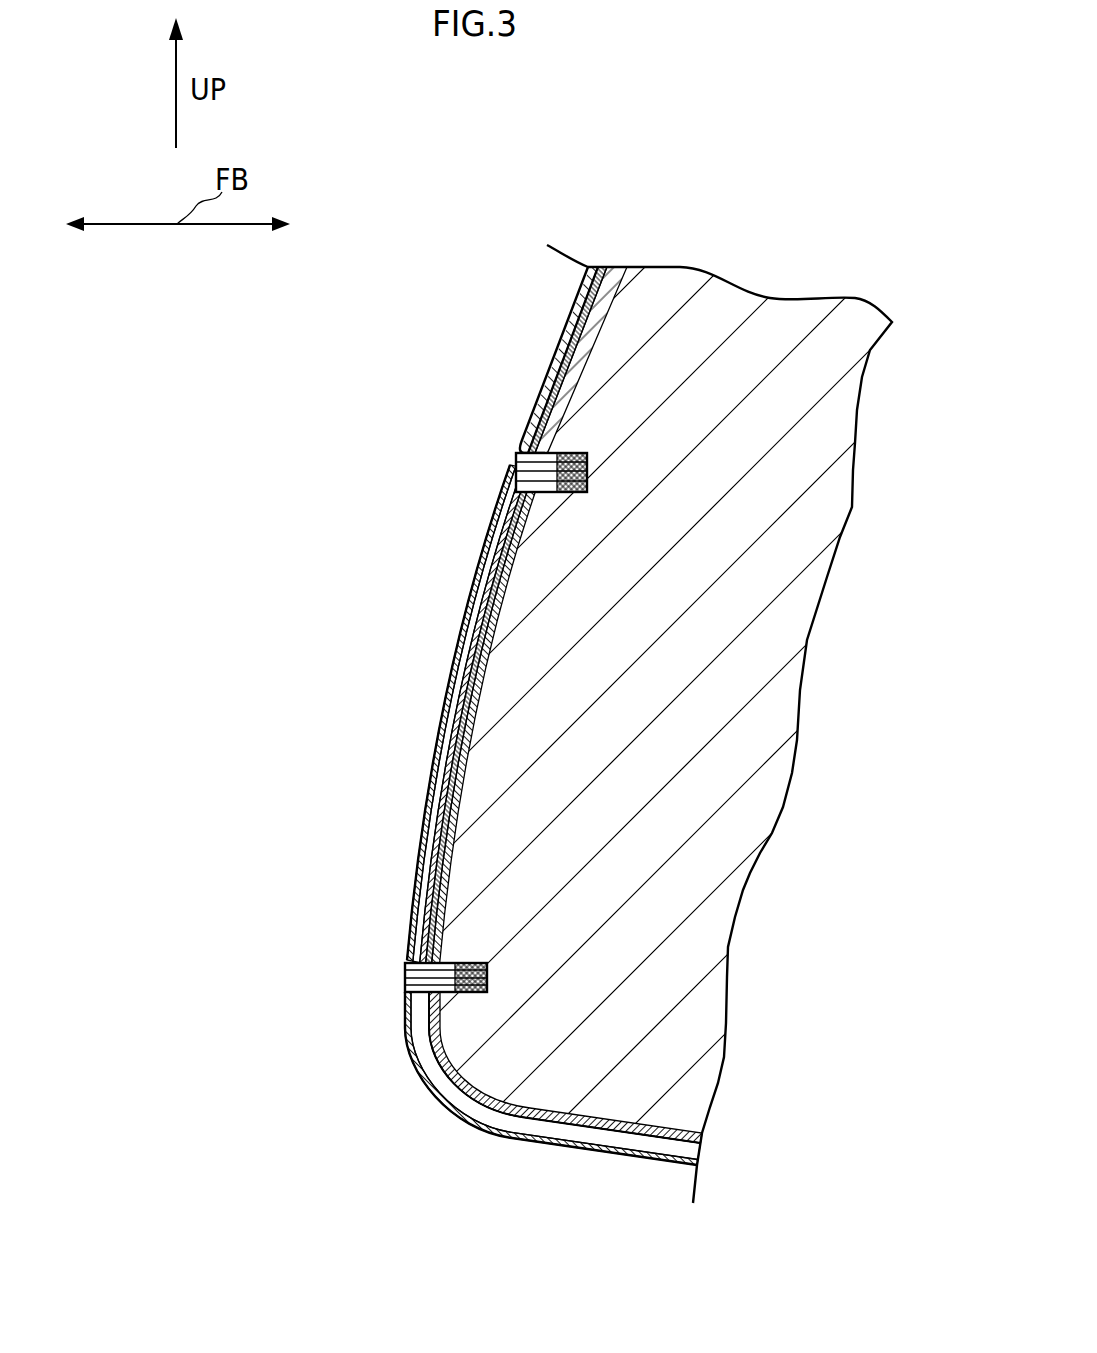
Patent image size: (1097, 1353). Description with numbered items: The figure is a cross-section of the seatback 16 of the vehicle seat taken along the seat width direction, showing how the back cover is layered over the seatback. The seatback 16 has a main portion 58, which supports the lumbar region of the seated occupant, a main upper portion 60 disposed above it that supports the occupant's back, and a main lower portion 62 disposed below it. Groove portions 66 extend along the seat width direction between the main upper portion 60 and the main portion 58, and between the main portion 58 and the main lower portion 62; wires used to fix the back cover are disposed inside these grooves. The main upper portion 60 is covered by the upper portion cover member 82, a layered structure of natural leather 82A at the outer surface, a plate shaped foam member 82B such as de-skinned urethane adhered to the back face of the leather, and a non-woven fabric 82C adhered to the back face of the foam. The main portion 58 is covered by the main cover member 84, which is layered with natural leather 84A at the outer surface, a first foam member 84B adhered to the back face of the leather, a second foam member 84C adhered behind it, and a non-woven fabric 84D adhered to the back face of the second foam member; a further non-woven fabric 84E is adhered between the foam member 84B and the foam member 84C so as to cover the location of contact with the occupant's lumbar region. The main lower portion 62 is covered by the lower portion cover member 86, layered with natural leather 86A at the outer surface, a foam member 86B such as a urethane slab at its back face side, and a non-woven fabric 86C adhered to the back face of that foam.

The seatback 16 is at (840, 592).
The main portion 58 is at (404, 716).
The main upper portion 60 is at (567, 348).
The main lower portion 62 is at (531, 1126).
The groove portions 66 is at (515, 454).
The upper portion cover member 82 is at (481, 360).
The natural leather 82A is at (558, 341).
The foam member 82B is at (546, 369).
The non-woven fabric 82C is at (556, 408).
The main cover member 84 is at (404, 716).
The natural leather 84A is at (452, 672).
The foam member 84B is at (450, 704).
The foam member 84C is at (446, 740).
The non-woven fabric 84D is at (436, 790).
The non-woven fabric 84E is at (318, 670).
The lower portion cover member 86 is at (531, 1126).
The natural leather 86A is at (442, 1118).
The foam member 86B is at (492, 1118).
The non-woven fabric 86C is at (543, 1110).